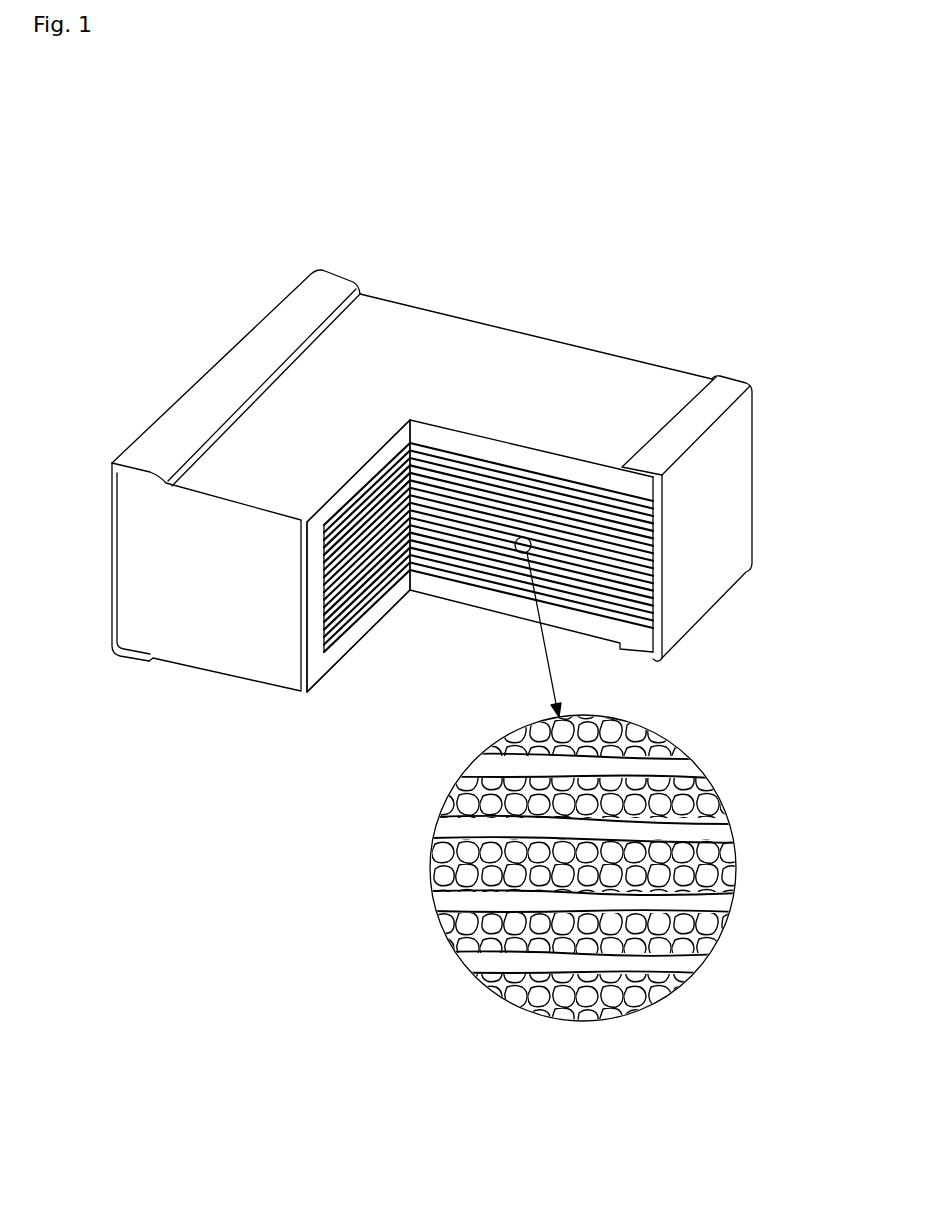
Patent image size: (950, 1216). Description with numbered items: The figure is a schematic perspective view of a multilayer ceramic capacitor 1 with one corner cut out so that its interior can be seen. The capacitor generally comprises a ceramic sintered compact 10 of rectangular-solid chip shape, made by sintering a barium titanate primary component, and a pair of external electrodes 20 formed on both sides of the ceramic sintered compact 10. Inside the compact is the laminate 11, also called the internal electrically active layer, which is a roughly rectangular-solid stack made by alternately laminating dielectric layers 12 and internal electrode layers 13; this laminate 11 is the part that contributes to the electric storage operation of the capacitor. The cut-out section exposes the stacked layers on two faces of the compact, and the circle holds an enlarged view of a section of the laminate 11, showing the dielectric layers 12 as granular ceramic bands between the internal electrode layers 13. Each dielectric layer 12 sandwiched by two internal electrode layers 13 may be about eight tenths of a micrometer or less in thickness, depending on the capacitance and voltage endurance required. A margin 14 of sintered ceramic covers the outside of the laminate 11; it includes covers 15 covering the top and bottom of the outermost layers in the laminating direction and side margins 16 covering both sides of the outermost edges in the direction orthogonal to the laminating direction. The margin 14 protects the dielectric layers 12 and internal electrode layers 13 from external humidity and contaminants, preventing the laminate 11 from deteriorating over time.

The multilayer ceramic capacitor 1 is at (548, 266).
The ceramic sintered compact 10 is at (585, 350).
The laminate 11 is at (453, 460).
The dielectric layer 12 is at (707, 791).
The internal electrode layer 13 is at (717, 835).
The margin 14 is at (290, 778).
The cover 15 is at (543, 467).
The side margin 16 is at (313, 627).
The external electrode 20 is at (268, 325).